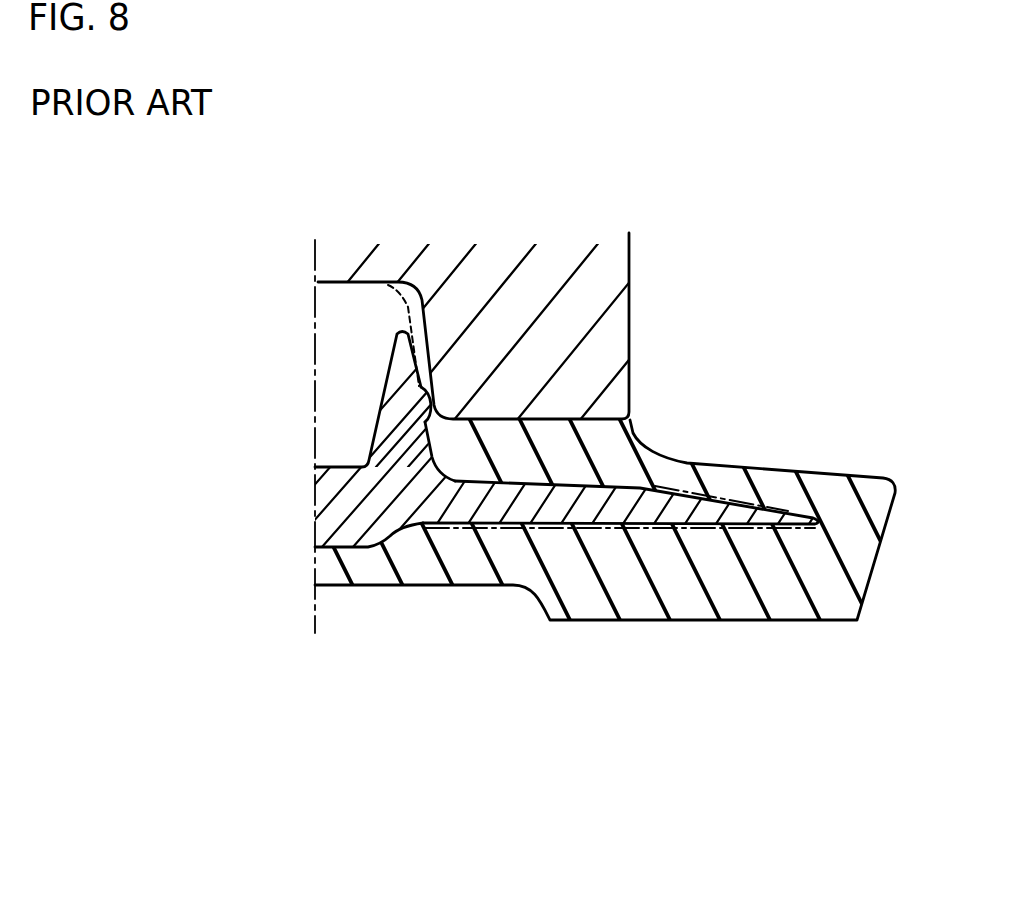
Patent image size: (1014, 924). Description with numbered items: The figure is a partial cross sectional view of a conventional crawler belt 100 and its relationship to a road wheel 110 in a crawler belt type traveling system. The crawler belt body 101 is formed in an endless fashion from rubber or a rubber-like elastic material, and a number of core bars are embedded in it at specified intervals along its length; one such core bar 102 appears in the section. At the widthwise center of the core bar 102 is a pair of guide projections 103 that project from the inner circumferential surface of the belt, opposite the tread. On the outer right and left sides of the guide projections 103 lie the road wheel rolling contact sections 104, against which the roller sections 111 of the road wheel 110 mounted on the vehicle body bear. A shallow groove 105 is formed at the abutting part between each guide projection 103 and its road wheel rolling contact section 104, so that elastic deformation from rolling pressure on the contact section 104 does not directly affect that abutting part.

The crawler belt 100 is at (720, 633).
The crawler belt body 101 is at (787, 480).
The core bar 102 is at (570, 524).
The guide projection 103 is at (385, 402).
The road wheel rolling contact section 104 is at (595, 428).
The shallow groove 105 is at (423, 396).
The road wheel 110 is at (597, 267).
The roller section 111 is at (575, 373).